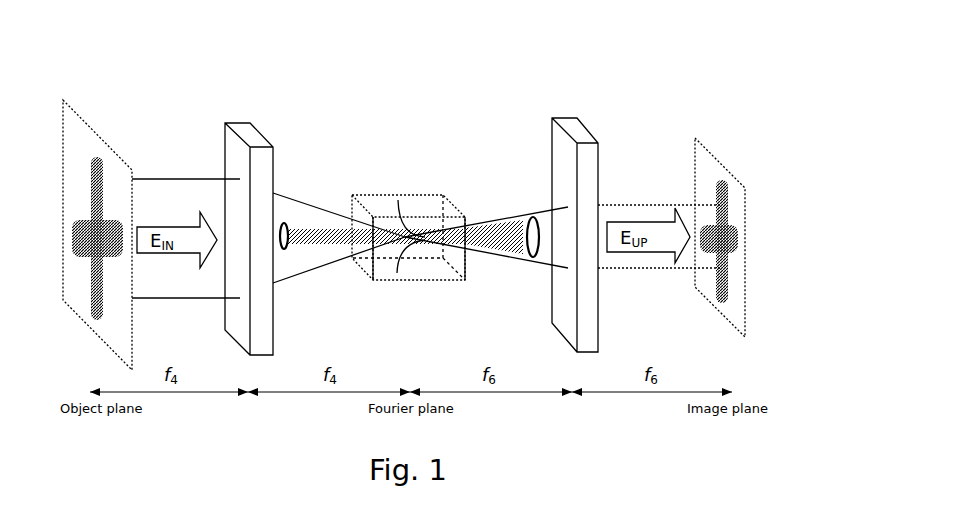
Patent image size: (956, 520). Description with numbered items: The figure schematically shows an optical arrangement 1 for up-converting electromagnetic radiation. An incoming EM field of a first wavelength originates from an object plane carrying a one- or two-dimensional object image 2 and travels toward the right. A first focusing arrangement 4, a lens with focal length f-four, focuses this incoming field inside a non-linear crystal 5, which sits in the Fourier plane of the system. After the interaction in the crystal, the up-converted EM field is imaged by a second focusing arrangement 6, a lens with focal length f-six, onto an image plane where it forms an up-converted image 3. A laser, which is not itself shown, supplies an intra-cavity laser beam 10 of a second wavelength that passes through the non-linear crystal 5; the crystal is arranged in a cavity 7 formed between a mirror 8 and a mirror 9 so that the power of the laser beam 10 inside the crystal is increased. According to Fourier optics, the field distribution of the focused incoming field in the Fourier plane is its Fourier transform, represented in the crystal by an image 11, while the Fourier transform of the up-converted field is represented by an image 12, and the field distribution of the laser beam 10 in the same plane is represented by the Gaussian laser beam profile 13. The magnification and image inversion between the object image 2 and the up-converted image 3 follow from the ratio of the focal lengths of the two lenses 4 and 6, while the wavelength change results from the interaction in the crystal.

The optical arrangement 1 is at (370, 82).
The object image 2 is at (98, 157).
The up-converted image 3 is at (722, 185).
The first focusing arrangement 4 is at (249, 223).
The non-linear crystal 5 is at (433, 195).
The second focusing arrangement 6 is at (575, 220).
The cavity 7 is at (307, 225).
The mirror 8 is at (285, 222).
The mirror 9 is at (532, 218).
The laser beam 10 is at (320, 228).
The Fourier transform image of incoming field 11 is at (365, 218).
The Fourier transform image of up-converted field 12 is at (455, 218).
The Gaussian laser beam profile 13 is at (398, 200).